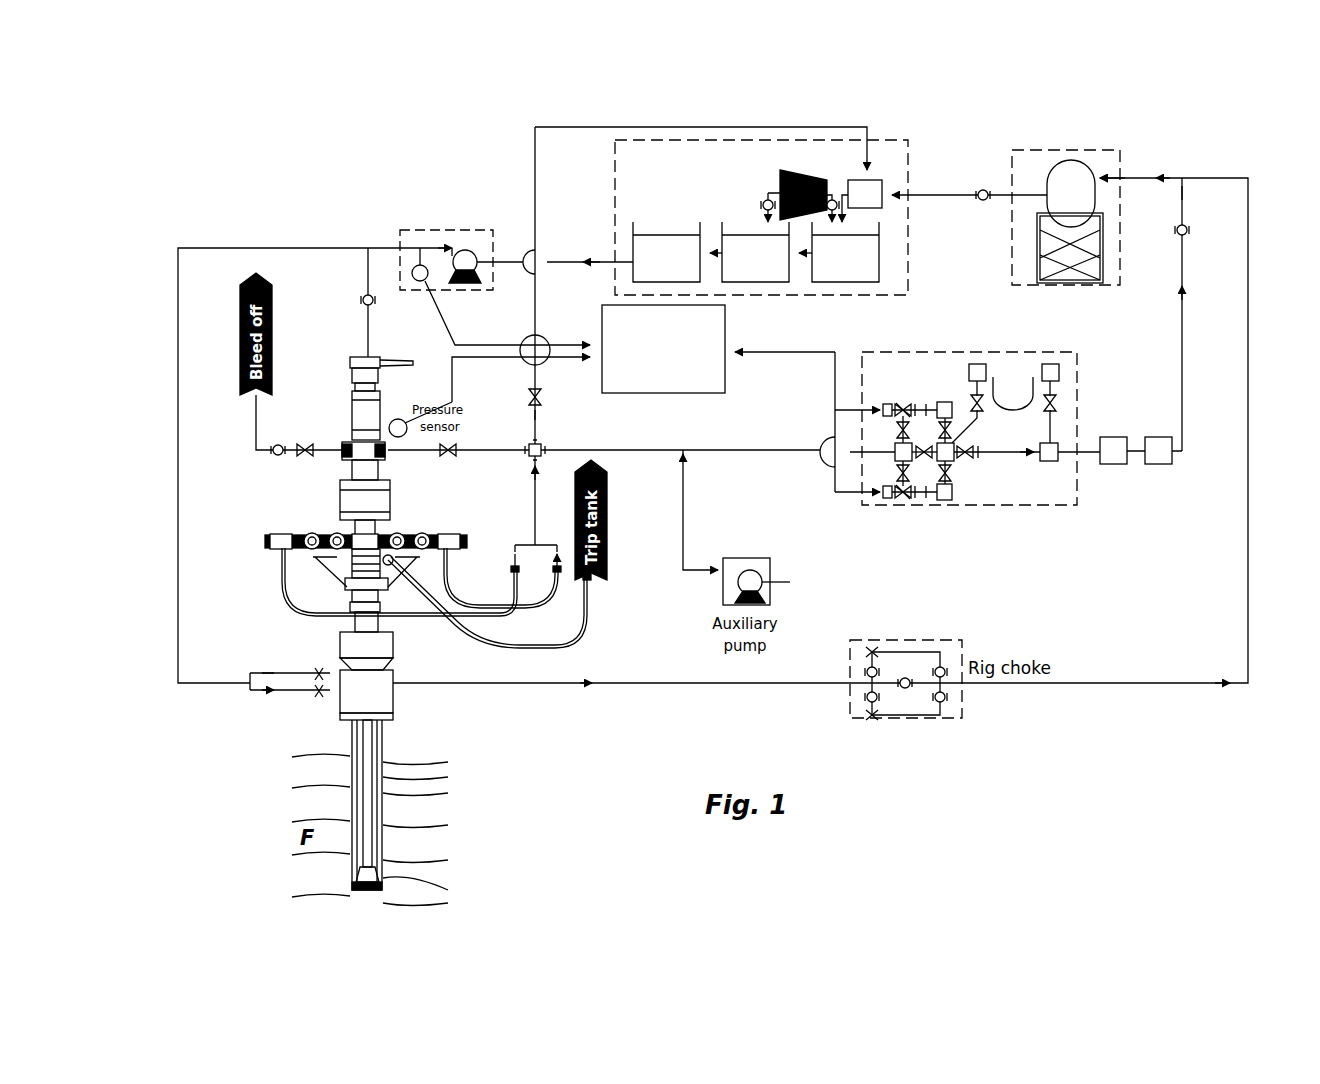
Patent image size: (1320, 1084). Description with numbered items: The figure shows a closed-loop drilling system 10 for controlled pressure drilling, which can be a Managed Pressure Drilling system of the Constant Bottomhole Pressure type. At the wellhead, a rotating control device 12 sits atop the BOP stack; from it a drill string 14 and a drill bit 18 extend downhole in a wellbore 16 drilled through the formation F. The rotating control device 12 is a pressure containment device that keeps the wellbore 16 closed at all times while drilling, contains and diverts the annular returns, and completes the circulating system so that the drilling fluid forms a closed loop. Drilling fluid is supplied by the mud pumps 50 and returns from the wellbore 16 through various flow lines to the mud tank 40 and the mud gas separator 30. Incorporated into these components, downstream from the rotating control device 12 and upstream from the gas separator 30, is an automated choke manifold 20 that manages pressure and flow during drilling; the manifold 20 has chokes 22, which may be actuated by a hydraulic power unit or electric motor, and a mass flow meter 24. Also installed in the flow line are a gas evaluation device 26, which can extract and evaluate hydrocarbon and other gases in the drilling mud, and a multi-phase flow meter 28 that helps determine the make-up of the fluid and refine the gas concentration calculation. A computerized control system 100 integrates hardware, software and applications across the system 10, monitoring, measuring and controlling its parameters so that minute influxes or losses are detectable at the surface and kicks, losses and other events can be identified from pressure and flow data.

The closed-loop drilling system 10 is at (288, 182).
The rotating control device 12 is at (340, 337).
The drill string 14 is at (373, 738).
The wellbore 16 is at (378, 780).
The drill bit 18 is at (377, 875).
The automated choke manifold 20 is at (970, 442).
The chokes 22 is at (902, 498).
The mass flow meter 24 is at (993, 377).
The gas evaluation device 26 is at (1115, 467).
The multi-phase flow meter 28 is at (1160, 467).
The mud gas separator 30 is at (1124, 147).
The mud tank 40 is at (888, 133).
The mud pumps 50 is at (453, 190).
The control system 100 is at (708, 393).